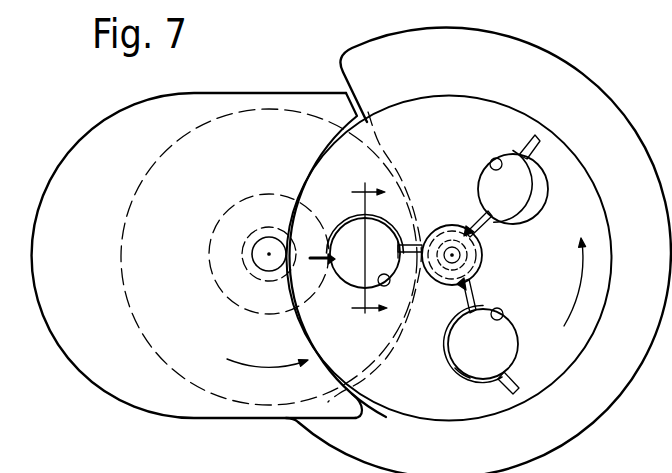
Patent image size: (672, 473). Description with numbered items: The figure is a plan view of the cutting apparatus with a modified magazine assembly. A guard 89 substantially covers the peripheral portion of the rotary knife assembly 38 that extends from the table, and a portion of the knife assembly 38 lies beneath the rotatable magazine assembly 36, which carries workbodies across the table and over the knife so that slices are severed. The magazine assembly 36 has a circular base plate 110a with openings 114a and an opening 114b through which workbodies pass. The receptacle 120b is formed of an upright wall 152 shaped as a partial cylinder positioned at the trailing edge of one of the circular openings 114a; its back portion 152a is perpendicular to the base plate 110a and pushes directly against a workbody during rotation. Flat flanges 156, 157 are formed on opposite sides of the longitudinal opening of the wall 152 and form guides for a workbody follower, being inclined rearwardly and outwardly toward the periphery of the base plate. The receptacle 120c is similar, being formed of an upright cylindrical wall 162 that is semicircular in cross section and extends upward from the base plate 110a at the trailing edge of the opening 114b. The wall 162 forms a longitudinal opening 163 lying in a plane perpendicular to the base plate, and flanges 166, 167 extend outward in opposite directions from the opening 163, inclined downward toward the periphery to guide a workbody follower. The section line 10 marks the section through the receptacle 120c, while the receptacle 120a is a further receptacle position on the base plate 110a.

The rotatable magazine assembly 36 is at (614, 212).
The circular base plate 110a is at (596, 322).
The guard 89 is at (141, 410).
The rotary knife assembly 38 is at (249, 349).
The receptacle 120c is at (388, 214).
The upright cylindrical wall 162 is at (337, 230).
The longitudinal opening 163 is at (351, 272).
The flange 166 is at (313, 265).
The section line 10 is at (369, 249).
The flange 167 is at (410, 243).
The flange 157 is at (470, 290).
The opening 114b is at (392, 286).
The receptacle 120b is at (550, 172).
The openings 114a is at (492, 161).
The flange 156 is at (519, 367).
The container pocket 120a is at (469, 379).
The upright wall 152 is at (448, 351).
The back portion 152a is at (462, 374).